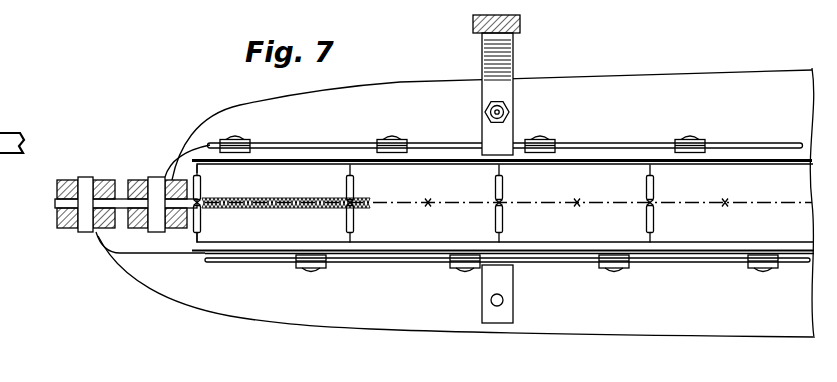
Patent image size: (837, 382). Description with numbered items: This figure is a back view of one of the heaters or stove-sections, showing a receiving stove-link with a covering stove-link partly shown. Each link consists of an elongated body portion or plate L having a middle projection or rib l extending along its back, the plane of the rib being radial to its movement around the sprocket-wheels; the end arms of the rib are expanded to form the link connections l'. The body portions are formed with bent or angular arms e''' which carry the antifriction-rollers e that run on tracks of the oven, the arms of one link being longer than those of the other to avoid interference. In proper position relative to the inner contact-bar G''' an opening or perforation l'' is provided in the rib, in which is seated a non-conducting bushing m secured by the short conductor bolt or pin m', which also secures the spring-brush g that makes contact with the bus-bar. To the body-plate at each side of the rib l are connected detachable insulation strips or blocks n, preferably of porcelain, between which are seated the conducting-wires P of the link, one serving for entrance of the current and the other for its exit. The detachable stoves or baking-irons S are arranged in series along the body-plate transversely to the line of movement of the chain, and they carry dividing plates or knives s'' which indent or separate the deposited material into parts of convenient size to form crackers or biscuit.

The body portion or plate L is at (208, 158).
The conducting-wires P is at (503, 206).
The antifriction-rollers e is at (126, 195).
The bent or angular arms e''' is at (151, 214).
The link connections l' is at (63, 234).
The middle projection or rib l is at (507, 206).
The opening or perforation l'' is at (508, 294).
The insulation strips or blocks n is at (253, 138).
The stoves or baking-irons S is at (465, 205).
The dividing plates or knives s'' is at (433, 204).
The spring-brushes g is at (514, 58).
The inner parallel contact-bars G''' is at (485, 24).
The non-conducting bushing m is at (517, 108).
The conductor bolt or pin m' is at (475, 117).